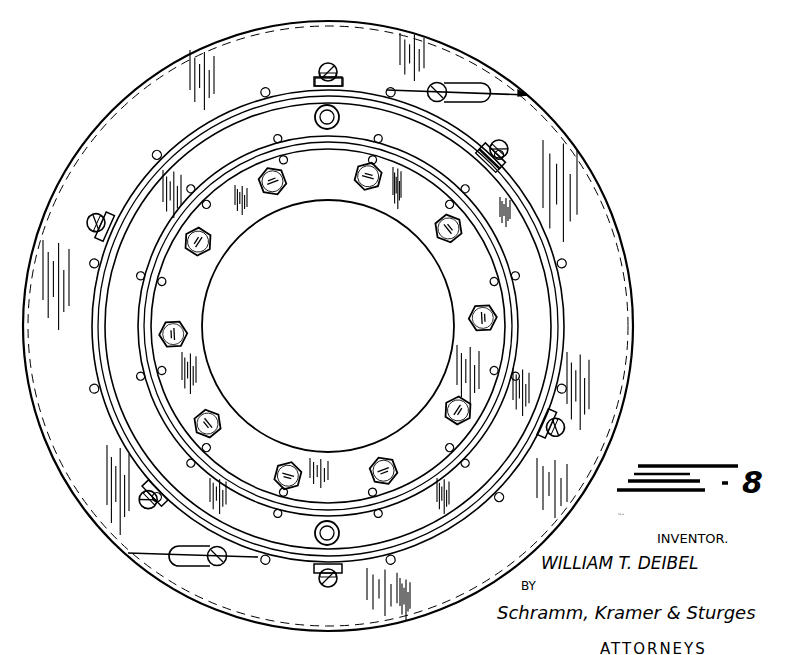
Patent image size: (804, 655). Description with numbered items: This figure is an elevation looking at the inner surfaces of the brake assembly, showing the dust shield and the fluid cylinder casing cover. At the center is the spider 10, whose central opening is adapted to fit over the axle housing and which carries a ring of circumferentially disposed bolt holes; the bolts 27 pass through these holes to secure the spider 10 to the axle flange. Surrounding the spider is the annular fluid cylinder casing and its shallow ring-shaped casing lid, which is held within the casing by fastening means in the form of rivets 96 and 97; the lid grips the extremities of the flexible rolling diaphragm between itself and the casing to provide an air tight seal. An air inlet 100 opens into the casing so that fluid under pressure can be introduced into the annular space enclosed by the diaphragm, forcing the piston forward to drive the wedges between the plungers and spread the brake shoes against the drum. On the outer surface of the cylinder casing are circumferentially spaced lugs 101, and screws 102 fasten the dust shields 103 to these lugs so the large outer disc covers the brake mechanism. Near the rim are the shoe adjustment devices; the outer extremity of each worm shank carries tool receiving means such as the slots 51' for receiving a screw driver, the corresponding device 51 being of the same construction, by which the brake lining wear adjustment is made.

The spider 10 is at (326, 180).
The bolts 27 is at (188, 327).
The clamping device 51 is at (457, 71).
The slots 51' is at (193, 571).
The rivets 96 is at (270, 104).
The rivets 97 is at (372, 138).
The air inlet 100 is at (340, 118).
The lugs 101 is at (345, 86).
The screws 102 is at (334, 64).
The dust shields 103 is at (257, 13).